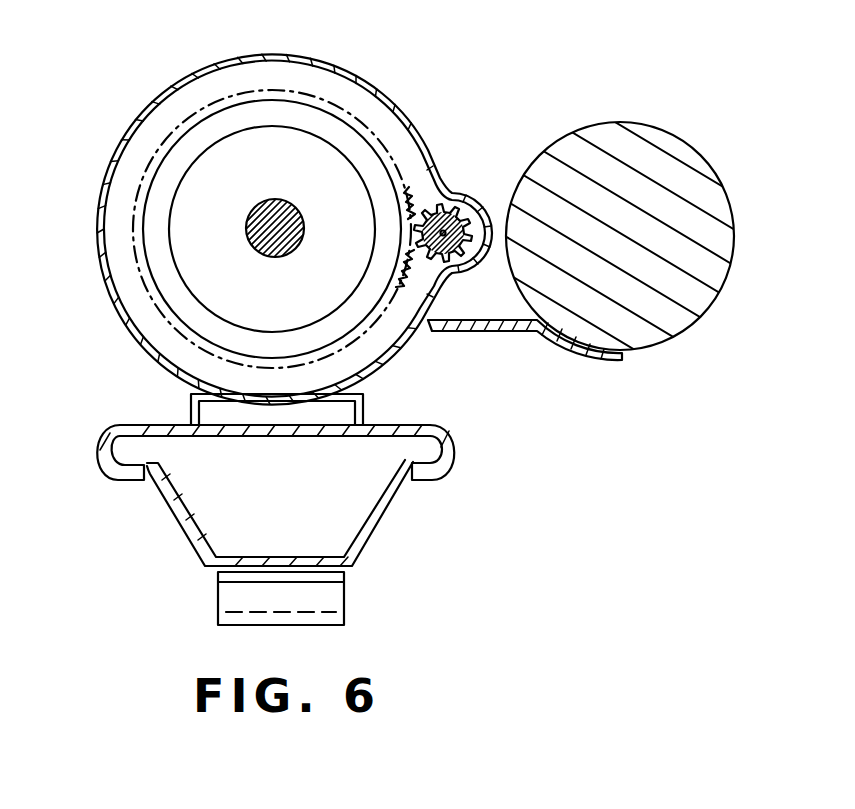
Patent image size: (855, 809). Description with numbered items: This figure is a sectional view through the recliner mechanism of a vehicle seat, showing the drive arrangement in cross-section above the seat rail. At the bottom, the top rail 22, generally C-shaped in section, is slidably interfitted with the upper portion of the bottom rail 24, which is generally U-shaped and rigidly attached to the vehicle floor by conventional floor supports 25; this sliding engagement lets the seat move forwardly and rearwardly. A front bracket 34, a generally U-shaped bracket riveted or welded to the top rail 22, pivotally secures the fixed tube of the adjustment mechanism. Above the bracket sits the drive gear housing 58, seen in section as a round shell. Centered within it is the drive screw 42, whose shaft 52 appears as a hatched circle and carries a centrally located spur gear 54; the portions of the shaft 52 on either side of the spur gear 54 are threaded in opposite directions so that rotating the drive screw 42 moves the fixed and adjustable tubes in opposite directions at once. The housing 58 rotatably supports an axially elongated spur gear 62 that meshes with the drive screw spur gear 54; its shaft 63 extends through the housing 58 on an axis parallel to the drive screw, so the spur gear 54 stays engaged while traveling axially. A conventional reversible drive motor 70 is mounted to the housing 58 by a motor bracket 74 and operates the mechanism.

The top rail 22 is at (455, 455).
The bottom rail 24 is at (378, 525).
The floor supports 25 is at (345, 603).
The front bracket 34 is at (190, 409).
The drive screw 42 is at (403, 299).
The shaft 52 is at (260, 207).
The spur gear 54 is at (352, 114).
The drive gear housing 58 is at (322, 61).
The elongated spur gear 62 is at (448, 200).
The shaft 63 is at (469, 209).
The drive motor 70 is at (682, 138).
The motor bracket 74 is at (600, 358).